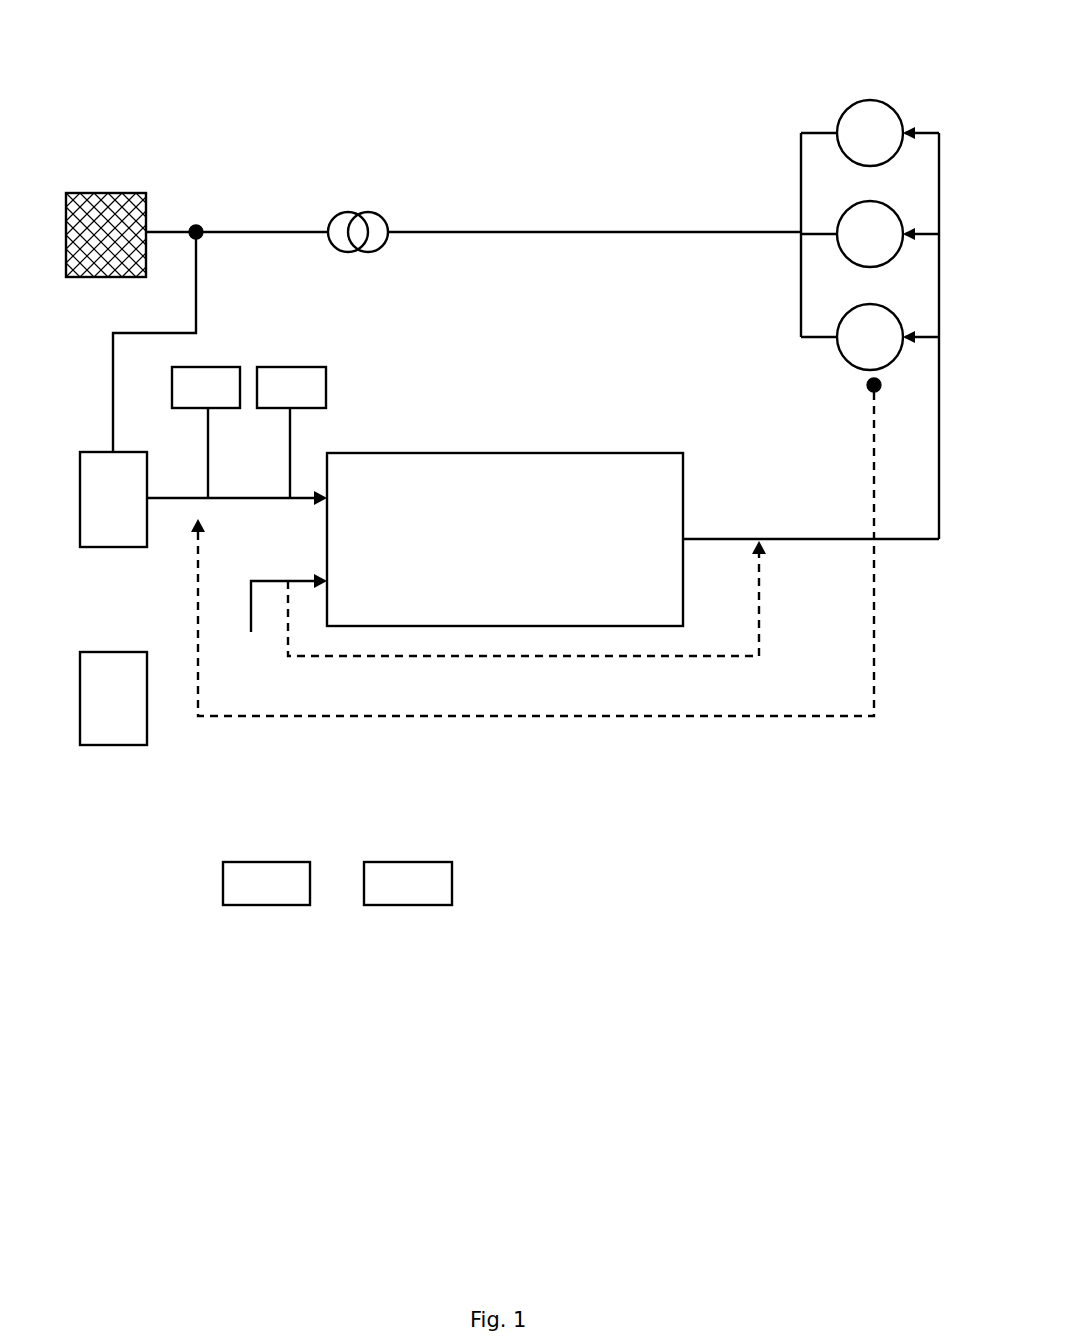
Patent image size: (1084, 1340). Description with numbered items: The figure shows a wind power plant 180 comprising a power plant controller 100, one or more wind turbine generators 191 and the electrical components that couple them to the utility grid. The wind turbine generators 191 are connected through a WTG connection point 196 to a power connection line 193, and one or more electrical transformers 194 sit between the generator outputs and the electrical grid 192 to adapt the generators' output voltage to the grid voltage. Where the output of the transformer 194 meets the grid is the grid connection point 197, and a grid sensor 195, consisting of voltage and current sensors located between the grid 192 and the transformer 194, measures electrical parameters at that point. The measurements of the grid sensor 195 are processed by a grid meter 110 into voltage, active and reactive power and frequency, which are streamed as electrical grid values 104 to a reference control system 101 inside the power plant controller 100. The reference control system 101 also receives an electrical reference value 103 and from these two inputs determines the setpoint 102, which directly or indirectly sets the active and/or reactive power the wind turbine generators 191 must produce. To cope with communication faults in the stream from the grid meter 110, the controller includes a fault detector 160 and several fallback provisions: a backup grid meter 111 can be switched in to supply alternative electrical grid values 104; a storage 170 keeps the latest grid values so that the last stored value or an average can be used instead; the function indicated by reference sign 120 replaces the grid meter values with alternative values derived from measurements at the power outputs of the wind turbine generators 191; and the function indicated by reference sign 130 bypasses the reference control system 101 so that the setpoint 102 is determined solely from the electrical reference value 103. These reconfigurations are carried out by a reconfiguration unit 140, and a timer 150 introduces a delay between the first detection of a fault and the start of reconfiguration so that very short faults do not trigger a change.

The power plant controller 100 is at (813, 774).
The reference control system 101 is at (521, 446).
The setpoint 102 is at (724, 533).
The electrical reference value 103 is at (295, 574).
The electrical grid values 104 is at (258, 494).
The grid meter 110 is at (97, 446).
The backup grid meter 111 is at (130, 754).
The replacement function 120 is at (543, 742).
The bypass function 130 is at (687, 666).
The reconfiguration unit 140 is at (269, 855).
The timer 150 is at (410, 855).
The fault detector 160 is at (327, 360).
The storage 170 is at (214, 360).
The wind power plant 180 is at (422, 56).
The wind turbine generator 191 is at (888, 319).
The electrical grid 192 is at (97, 186).
The power connection line 193 is at (584, 222).
The electrical transformer 194 is at (368, 201).
The grid sensor 195 is at (203, 218).
The WTG connection point 196 is at (792, 224).
The grid connection point 197 is at (166, 225).